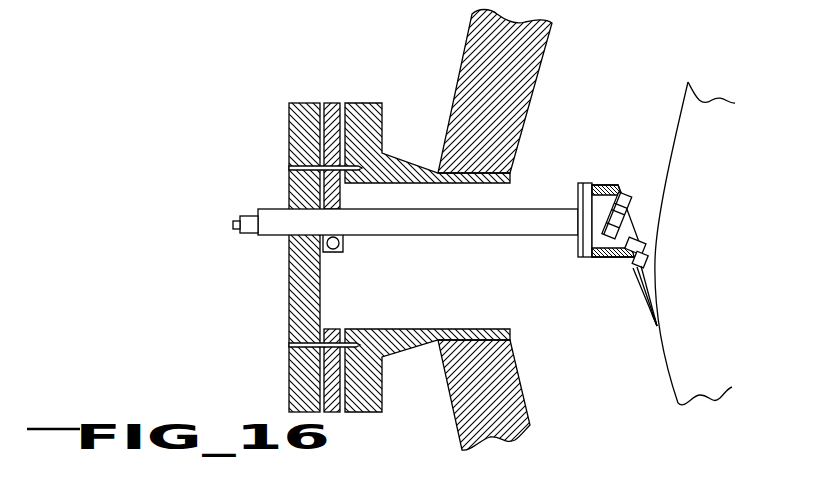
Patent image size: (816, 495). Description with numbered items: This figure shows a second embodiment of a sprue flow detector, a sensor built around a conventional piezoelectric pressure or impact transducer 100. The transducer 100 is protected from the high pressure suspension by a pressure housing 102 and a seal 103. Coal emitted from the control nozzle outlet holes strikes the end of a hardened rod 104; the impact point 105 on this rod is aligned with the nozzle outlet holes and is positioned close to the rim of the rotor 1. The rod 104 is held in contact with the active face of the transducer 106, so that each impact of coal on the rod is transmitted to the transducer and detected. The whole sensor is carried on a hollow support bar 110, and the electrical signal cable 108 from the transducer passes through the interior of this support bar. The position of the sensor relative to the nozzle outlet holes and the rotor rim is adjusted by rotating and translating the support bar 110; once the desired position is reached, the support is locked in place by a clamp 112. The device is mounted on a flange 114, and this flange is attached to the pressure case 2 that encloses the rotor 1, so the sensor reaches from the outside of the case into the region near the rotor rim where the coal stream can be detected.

The rotor 1 is at (674, 110).
The pressure case 2 is at (463, 57).
The piezoelectric pressure or impact transducer 100 is at (597, 258).
The pressure housing 102 is at (630, 143).
The seal 103 is at (645, 246).
The hardened rod 104 is at (648, 298).
The impact point 105 is at (657, 328).
The active face of the transducer 106 is at (644, 263).
The electrical signal cable 108 is at (623, 188).
The hollow support bar 110 is at (468, 218).
The clamp 112 is at (347, 250).
The flange 114 is at (289, 123).